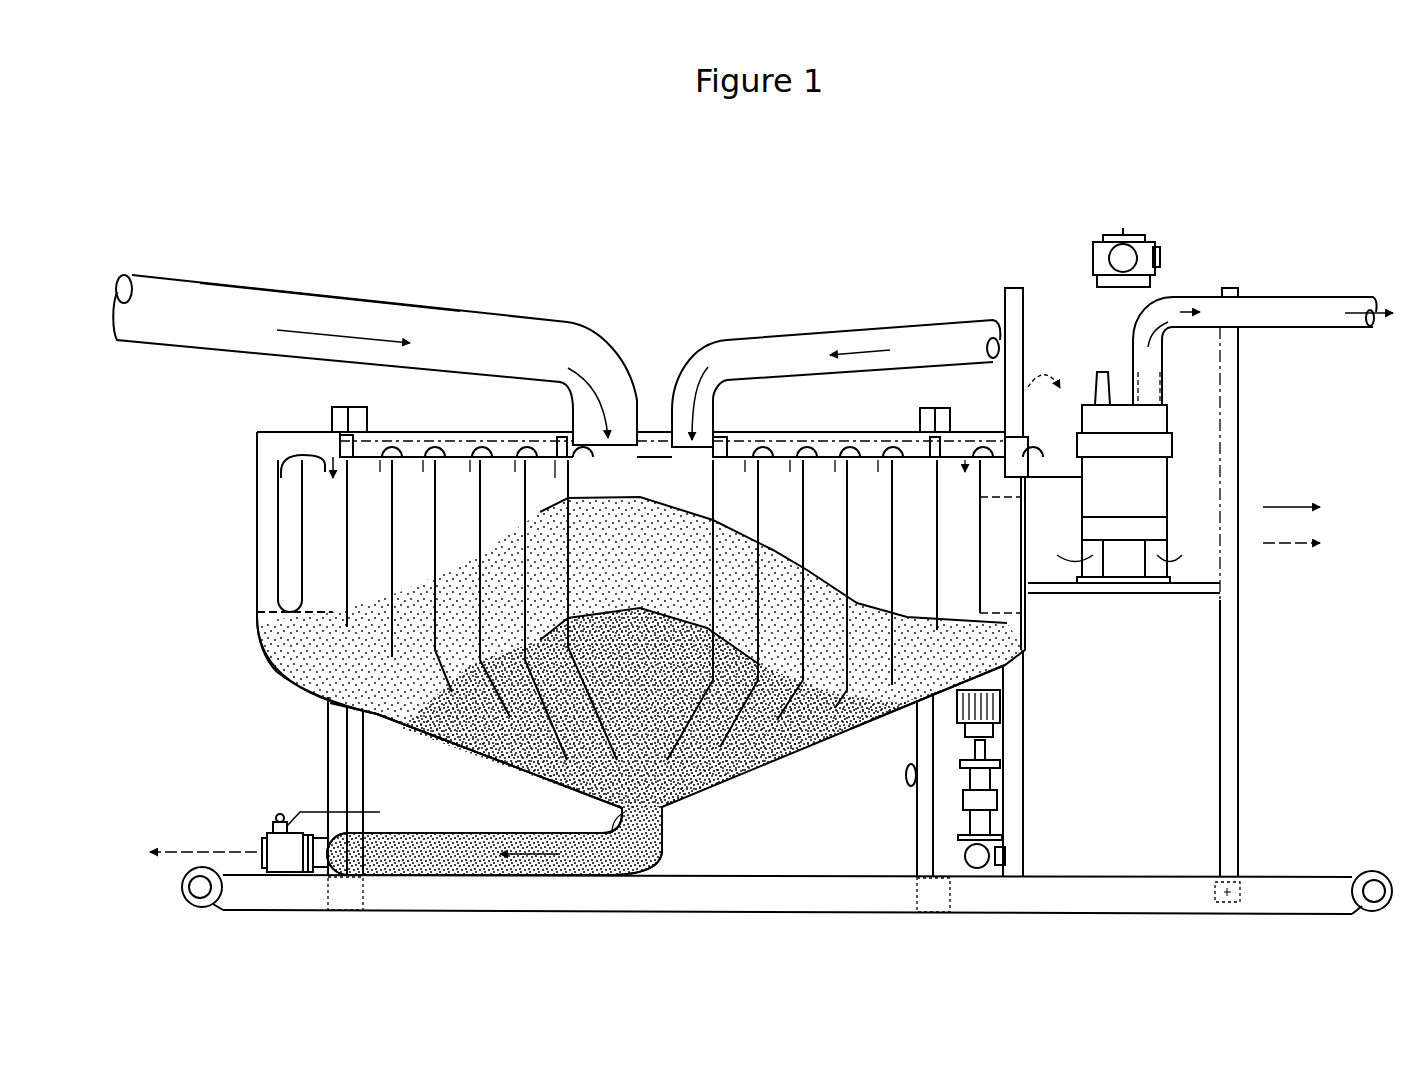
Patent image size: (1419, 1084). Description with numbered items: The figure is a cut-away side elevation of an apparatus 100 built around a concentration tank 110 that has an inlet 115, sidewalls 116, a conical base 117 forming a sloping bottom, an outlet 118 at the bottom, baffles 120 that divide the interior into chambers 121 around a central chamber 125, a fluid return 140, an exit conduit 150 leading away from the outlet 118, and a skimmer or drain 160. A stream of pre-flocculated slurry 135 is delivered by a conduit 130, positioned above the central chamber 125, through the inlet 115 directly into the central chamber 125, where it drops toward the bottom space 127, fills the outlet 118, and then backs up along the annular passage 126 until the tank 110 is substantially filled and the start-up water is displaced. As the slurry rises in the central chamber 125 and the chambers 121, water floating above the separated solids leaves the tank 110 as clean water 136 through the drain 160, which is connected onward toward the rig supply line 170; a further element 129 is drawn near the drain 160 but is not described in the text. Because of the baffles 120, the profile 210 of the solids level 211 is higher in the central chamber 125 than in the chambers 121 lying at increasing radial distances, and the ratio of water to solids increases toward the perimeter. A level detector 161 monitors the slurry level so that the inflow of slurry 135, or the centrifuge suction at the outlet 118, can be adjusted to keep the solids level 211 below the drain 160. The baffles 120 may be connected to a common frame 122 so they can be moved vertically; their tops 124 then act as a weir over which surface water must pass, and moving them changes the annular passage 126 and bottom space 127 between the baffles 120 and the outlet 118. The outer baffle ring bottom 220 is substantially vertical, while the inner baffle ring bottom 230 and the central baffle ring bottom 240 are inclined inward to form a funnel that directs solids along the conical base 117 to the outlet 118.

The apparatus 100 is at (295, 237).
The concentration tank 110 is at (255, 482).
The inlet 115 is at (290, 443).
The sidewalls 116 is at (255, 588).
The conical base 117 is at (377, 720).
The outlet 118 is at (607, 823).
The baffles 120 is at (300, 518).
The chambers 121 is at (787, 505).
The common frame 122 is at (937, 438).
The tops of baffles 124 is at (397, 460).
The central chamber 125 is at (655, 497).
The annular passage 126 is at (323, 653).
The bottom space 127 is at (673, 798).
The skimmer plate 129 is at (964, 475).
The conduit 130 is at (397, 307).
The stream of pre-flocculated slurry 135 is at (290, 313).
The clean water 136 is at (1030, 472).
The fluid return 140 is at (728, 360).
The exit conduit 150 is at (640, 850).
The skimmer or drain 160 is at (1028, 475).
The level detector 161 is at (1012, 440).
The rig supply line 170 is at (1250, 310).
The profile of solids level 210 is at (1027, 617).
The solids level 211 is at (642, 485).
The outer baffle ring bottom 220 is at (257, 617).
The inner baffle ring bottom 230 is at (450, 690).
The central baffle ring bottom 240 is at (567, 785).